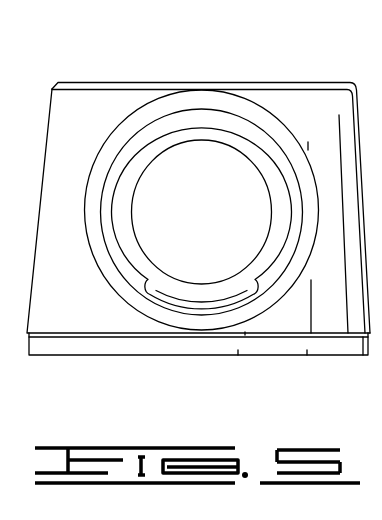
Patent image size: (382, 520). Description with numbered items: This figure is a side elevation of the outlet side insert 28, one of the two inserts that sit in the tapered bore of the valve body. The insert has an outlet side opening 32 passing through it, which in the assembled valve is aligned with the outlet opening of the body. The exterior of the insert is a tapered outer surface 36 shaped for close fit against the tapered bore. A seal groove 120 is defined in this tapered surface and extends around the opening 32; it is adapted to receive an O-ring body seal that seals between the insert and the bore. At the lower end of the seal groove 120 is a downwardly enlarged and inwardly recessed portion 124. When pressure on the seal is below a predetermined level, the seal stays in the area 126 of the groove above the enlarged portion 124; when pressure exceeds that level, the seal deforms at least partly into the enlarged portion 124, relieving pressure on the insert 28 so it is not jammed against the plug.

The outlet side insert 28 is at (283, 108).
The tapered outer surface 36 is at (193, 101).
The seal groove 120 is at (137, 145).
The area of groove 126 is at (200, 298).
The enlarged portion 124 is at (203, 312).
The outlet side opening 32 is at (142, 247).